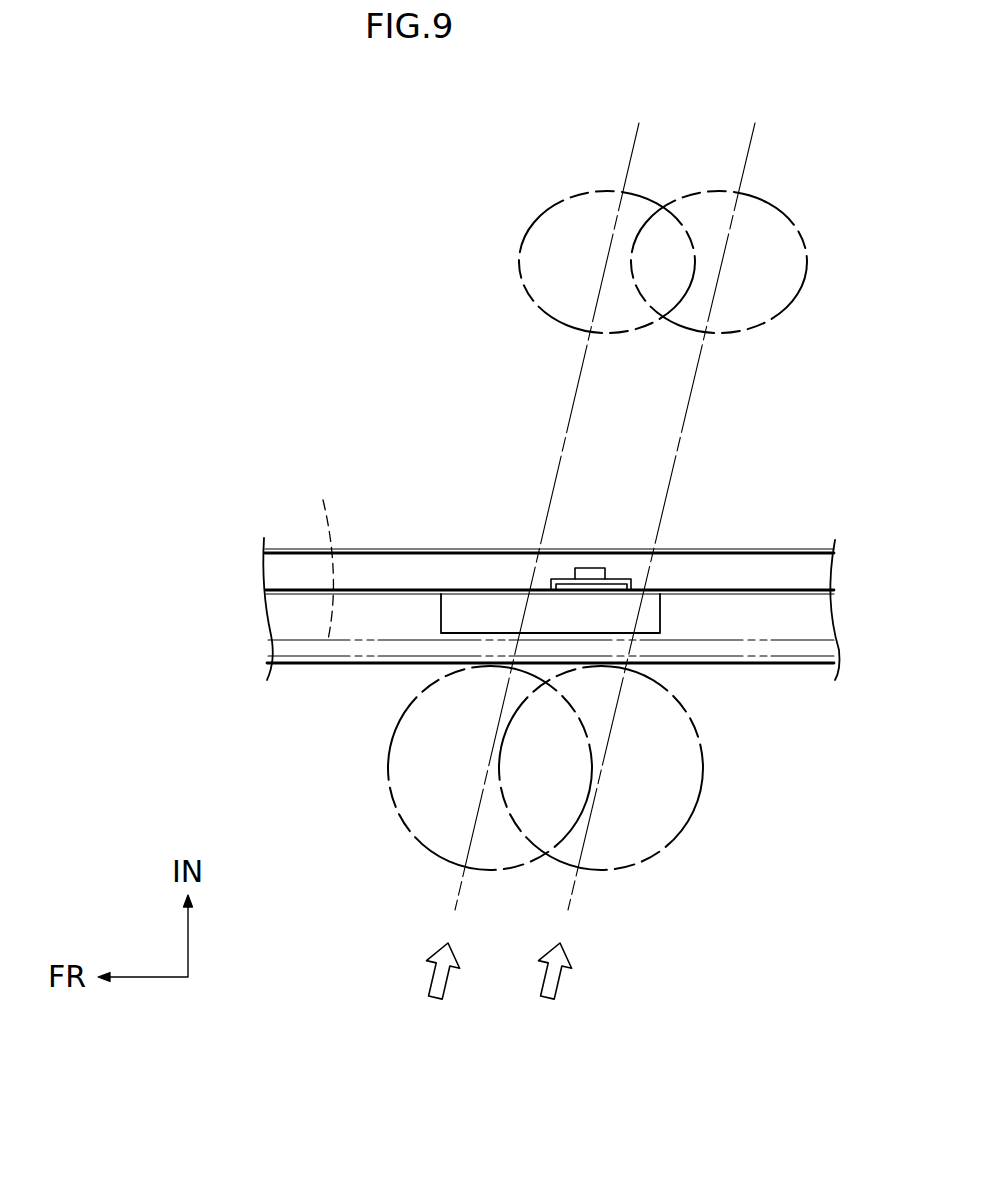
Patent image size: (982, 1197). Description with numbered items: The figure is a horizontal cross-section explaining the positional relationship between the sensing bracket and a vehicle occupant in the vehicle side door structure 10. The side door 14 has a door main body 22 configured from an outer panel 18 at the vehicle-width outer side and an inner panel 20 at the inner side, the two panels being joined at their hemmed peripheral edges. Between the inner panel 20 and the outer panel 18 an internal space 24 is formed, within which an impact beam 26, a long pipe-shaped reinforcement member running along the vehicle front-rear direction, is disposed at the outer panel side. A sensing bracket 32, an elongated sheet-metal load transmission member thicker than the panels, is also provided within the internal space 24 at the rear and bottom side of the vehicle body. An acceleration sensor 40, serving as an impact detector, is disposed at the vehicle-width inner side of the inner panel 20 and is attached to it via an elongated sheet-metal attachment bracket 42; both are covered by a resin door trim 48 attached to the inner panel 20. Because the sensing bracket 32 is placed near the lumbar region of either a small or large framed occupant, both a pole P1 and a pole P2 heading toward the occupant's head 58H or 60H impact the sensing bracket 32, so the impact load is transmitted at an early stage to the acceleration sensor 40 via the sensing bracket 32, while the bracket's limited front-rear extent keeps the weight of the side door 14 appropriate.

The vehicle side door structure 10 is at (502, 450).
The side door 14 is at (396, 667).
The outer panel 18 is at (817, 738).
The inner panel 20 is at (797, 596).
The door main body 22 is at (550, 694).
The internal space 24 is at (280, 600).
The impact beam 26 is at (326, 552).
The sensing bracket 32 is at (463, 603).
The acceleration sensor 40 is at (589, 568).
The attachment bracket 42 is at (622, 580).
The door trim 48 is at (763, 550).
The head of small framed vehicle occupant 58H is at (566, 188).
The head of large framed vehicle occupant 60H is at (757, 187).
The pole P1 is at (418, 848).
The pole P2 is at (670, 848).